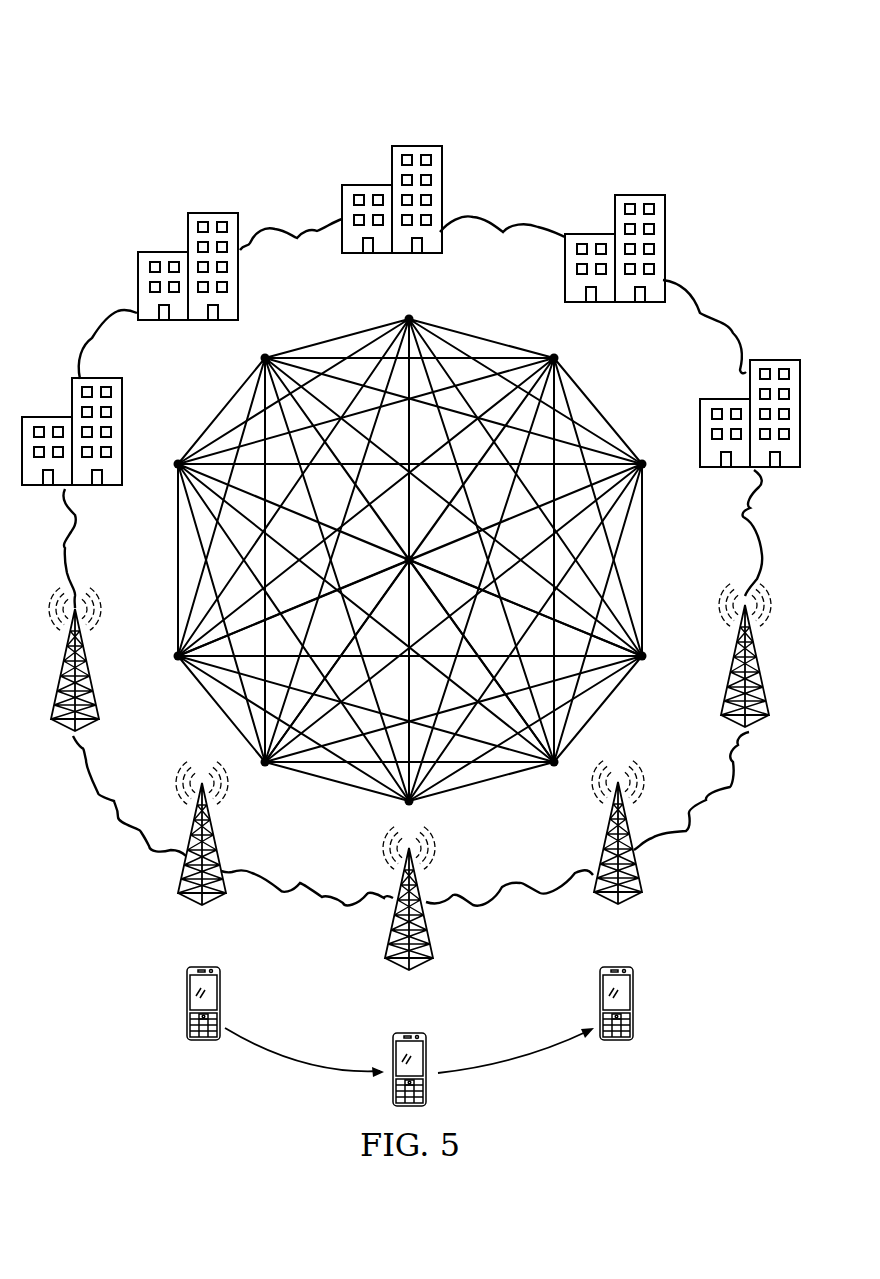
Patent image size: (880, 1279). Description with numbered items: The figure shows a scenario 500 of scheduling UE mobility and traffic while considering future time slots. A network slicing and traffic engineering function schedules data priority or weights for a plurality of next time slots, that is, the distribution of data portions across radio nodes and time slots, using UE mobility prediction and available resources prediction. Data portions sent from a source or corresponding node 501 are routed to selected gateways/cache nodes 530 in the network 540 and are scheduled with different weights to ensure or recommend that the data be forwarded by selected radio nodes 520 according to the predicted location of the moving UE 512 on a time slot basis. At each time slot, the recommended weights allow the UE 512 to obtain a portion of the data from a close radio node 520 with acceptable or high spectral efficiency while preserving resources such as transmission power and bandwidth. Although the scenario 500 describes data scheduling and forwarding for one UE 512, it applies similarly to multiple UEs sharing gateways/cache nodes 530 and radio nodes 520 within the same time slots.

The scenario 500 is at (183, 57).
The corresponding node 501 is at (417, 146).
The UE 512 is at (393, 1088).
The radio node 520 is at (68, 733).
The gateway/cache node 530 is at (164, 252).
The network 540 is at (502, 216).